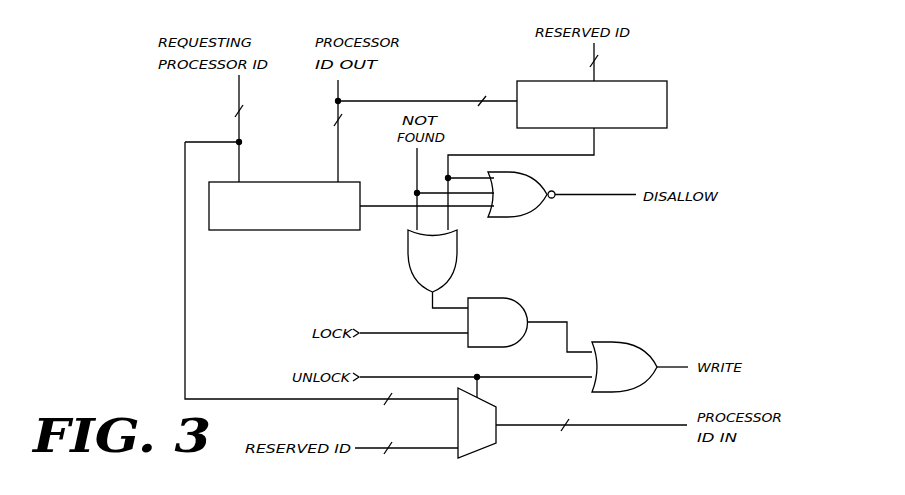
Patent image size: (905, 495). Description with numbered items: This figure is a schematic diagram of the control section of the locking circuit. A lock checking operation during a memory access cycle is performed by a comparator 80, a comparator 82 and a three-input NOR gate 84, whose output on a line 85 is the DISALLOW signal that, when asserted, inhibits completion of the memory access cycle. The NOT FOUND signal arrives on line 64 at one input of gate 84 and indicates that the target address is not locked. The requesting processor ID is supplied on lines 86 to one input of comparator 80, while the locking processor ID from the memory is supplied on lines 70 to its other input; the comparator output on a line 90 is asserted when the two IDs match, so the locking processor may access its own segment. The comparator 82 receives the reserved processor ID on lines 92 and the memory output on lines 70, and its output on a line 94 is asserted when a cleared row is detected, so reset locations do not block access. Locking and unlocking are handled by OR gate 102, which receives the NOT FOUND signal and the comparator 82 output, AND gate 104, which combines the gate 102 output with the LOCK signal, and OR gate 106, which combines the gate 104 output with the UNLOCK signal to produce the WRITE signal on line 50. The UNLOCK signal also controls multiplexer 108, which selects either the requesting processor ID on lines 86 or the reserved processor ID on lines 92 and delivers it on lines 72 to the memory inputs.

The lines 86 is at (239, 93).
The lines 70 is at (338, 117).
The lines 92 is at (594, 58).
The line 64 is at (417, 160).
The comparator 82 is at (667, 105).
The line 94 is at (594, 150).
The comparator 80 is at (267, 231).
The line 90 is at (401, 206).
The NOR gate 84 is at (520, 203).
The line 85 is at (568, 195).
The OR gate 102 is at (446, 267).
The AND gate 104 is at (507, 328).
The OR gate 106 is at (626, 376).
The line 50 is at (673, 368).
The multiplexer 108 is at (486, 393).
The lines 72 is at (641, 426).